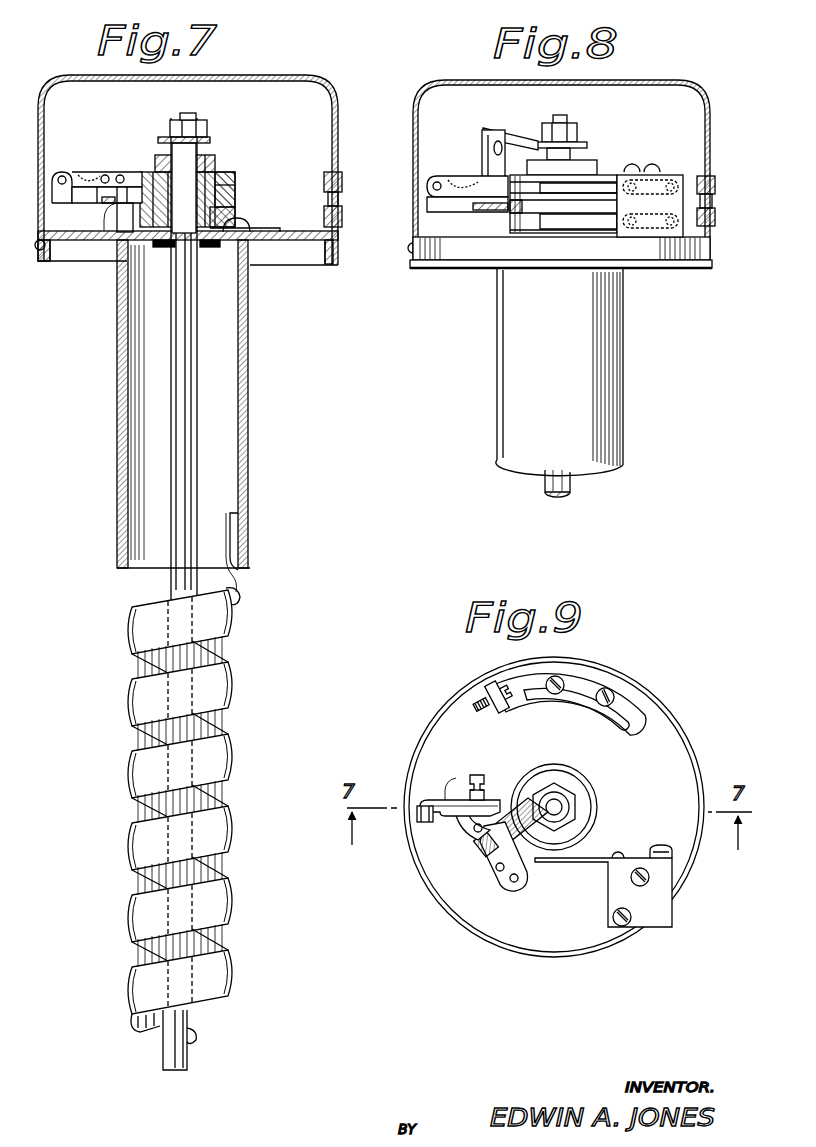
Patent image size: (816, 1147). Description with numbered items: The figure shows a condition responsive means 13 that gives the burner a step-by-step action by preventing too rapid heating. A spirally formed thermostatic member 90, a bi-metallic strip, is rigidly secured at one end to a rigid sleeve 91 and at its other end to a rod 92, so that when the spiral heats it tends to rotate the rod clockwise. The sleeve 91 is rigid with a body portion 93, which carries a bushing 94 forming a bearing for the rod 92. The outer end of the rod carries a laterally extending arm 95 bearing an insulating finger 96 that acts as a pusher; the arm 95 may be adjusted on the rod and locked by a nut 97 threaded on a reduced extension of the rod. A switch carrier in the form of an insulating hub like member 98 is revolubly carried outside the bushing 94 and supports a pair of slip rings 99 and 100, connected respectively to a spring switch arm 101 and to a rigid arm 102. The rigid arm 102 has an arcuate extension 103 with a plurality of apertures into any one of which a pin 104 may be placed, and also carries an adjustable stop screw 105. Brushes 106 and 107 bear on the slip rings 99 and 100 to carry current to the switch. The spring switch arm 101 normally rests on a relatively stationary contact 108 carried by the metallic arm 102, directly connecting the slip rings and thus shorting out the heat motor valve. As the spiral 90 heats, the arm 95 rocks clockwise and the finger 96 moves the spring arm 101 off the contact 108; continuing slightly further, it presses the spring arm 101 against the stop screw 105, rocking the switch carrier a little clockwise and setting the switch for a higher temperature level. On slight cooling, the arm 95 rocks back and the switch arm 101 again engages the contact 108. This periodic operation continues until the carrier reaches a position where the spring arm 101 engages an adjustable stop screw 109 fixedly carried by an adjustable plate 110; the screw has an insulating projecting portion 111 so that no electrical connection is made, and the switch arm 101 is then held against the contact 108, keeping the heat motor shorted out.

In FIG. 7, the condition responsive means 13 is at (324, 90).
In FIG. 8, the condition responsive means 13 is at (702, 92).
In FIG. 9, the condition responsive means 13 is at (688, 726).
In FIG. 7, the spirally formed thermostatic member 90 is at (131, 780).
In FIG. 7, the rigid sleeve 91 is at (249, 472).
In FIG. 8, the rigid sleeve 91 is at (625, 414).
In FIG. 7, the rod 92 is at (168, 516).
In FIG. 8, the rod 92 is at (545, 482).
In FIG. 9, the rod 92 is at (569, 805).
In FIG. 7, the body portion 93 is at (275, 252).
In FIG. 7, the bushing 94 is at (212, 156).
In FIG. 8, the laterally extending arm 95 is at (520, 131).
In FIG. 9, the laterally extending arm 95 is at (522, 855).
In FIG. 8, the insulating finger 96 is at (481, 170).
In FIG. 9, the insulating finger 96 is at (470, 848).
In FIG. 7, the nut 97 is at (170, 127).
In FIG. 8, the nut 97 is at (586, 138).
In FIG. 9, the nut 97 is at (557, 793).
In FIG. 7, the insulating hub like member 98 is at (226, 182).
In FIG. 7, the slip ring 99 is at (238, 186).
In FIG. 8, the slip ring 99 is at (530, 185).
In FIG. 7, the slip ring 100 is at (238, 212).
In FIG. 8, the slip ring 100 is at (509, 226).
In FIG. 7, the spring switch arm 101 is at (75, 171).
In FIG. 8, the spring switch arm 101 is at (467, 194).
In FIG. 9, the spring switch arm 101 is at (432, 800).
In FIG. 7, the rigid arm 102 is at (82, 208).
In FIG. 9, the rigid arm 102 is at (456, 792).
In FIG. 9, the arcuate extension 103 is at (500, 888).
In FIG. 9, the pin 104 is at (486, 860).
In FIG. 9, the adjustable stop screw 105 is at (484, 772).
In FIG. 8, the brush 106 is at (618, 176).
In FIG. 9, the brush 106 is at (585, 864).
In FIG. 8, the brush 107 is at (615, 228).
In FIG. 9, the relatively stationary contact 108 is at (424, 818).
In FIG. 9, the adjustable stop screw 109 is at (480, 696).
In FIG. 9, the adjustable plate 110 is at (590, 684).
In FIG. 9, the insulating projecting portion 111 is at (470, 706).